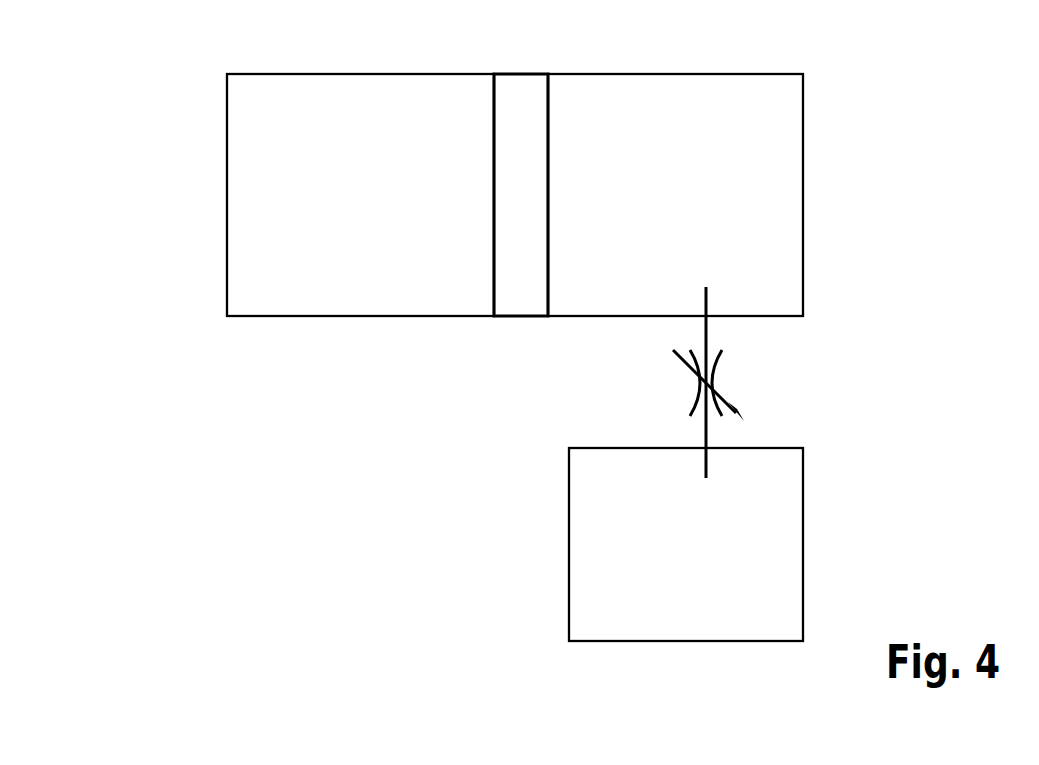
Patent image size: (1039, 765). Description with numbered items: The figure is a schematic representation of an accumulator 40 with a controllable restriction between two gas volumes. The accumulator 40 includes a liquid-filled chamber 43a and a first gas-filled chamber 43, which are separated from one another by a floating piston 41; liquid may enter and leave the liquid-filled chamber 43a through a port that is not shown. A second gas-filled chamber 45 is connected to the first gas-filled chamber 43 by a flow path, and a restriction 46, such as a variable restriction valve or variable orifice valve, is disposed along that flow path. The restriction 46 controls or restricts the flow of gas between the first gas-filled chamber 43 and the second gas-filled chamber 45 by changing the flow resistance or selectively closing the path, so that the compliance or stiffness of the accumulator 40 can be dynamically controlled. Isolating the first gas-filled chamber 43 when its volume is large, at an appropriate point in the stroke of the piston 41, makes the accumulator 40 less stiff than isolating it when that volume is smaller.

The accumulator 40 is at (154, 40).
The floating piston 41 is at (537, 199).
The first gas-filled chamber 43 is at (693, 208).
The liquid-filled chamber 43a is at (378, 196).
The second gas-filled chamber 45 is at (706, 563).
The restriction 46 is at (712, 386).